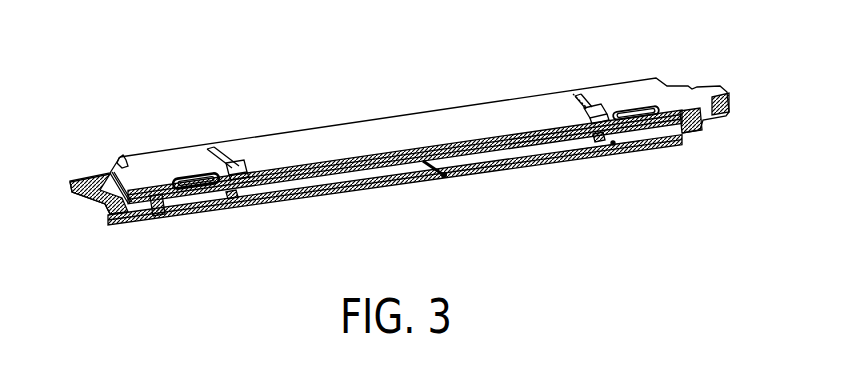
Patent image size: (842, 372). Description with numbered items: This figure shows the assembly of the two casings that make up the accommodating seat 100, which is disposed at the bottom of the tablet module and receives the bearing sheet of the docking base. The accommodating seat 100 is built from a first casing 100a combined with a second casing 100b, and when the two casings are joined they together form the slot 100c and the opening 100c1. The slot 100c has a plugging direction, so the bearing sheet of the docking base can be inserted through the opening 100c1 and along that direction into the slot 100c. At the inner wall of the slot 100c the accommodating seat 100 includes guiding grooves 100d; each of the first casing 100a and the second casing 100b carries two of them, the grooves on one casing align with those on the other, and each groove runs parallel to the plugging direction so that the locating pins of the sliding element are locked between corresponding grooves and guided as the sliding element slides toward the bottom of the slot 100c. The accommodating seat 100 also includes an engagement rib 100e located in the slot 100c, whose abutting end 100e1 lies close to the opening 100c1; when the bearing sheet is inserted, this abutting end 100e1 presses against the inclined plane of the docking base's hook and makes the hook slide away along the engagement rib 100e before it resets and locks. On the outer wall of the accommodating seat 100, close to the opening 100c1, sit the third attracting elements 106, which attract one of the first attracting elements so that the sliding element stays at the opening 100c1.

The accommodating seat 100 is at (399, 148).
The first casing 100a is at (152, 210).
The second casing 100b is at (503, 97).
The slot 100c is at (353, 186).
The opening 100c1 is at (596, 156).
The guiding groove 100d is at (590, 93).
The engagement rib 100e is at (432, 167).
The abutting end 100e1 is at (446, 177).
The third attracting element 106 is at (188, 172).